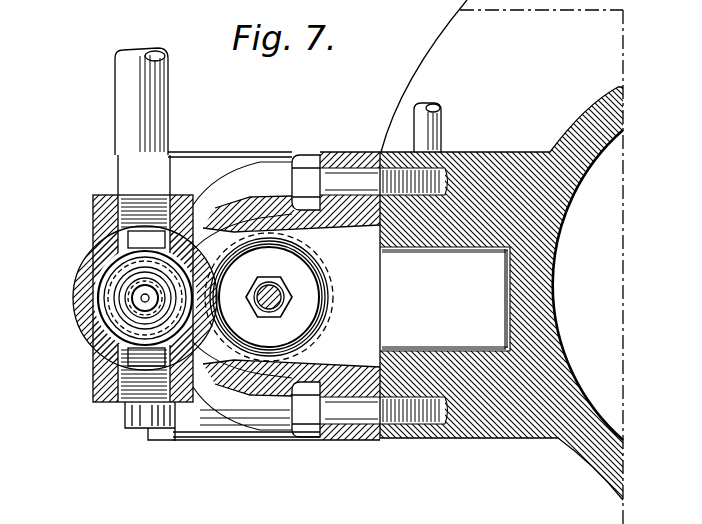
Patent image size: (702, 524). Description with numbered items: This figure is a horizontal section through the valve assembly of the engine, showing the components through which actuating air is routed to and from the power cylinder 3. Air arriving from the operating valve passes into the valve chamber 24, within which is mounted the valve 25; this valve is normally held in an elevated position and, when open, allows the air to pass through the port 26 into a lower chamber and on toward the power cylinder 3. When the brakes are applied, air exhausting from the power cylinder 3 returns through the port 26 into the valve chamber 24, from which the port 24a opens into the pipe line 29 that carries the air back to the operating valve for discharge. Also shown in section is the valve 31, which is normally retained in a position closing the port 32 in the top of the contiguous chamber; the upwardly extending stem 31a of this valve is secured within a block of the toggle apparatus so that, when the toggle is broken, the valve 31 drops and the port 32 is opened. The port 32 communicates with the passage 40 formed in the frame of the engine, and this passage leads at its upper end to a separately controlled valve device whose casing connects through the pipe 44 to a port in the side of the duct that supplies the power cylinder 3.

The power cylinder 3 is at (550, 256).
The passage 40 is at (445, 299).
The valve chamber 24 is at (100, 350).
The port 24a is at (127, 240).
The valve 25 is at (100, 293).
The port 26 is at (120, 312).
The pipe line 29 is at (160, 112).
The pipe 44 is at (441, 127).
The port 32 is at (326, 268).
The valve 31 is at (301, 310).
The valve stem 31a is at (271, 277).